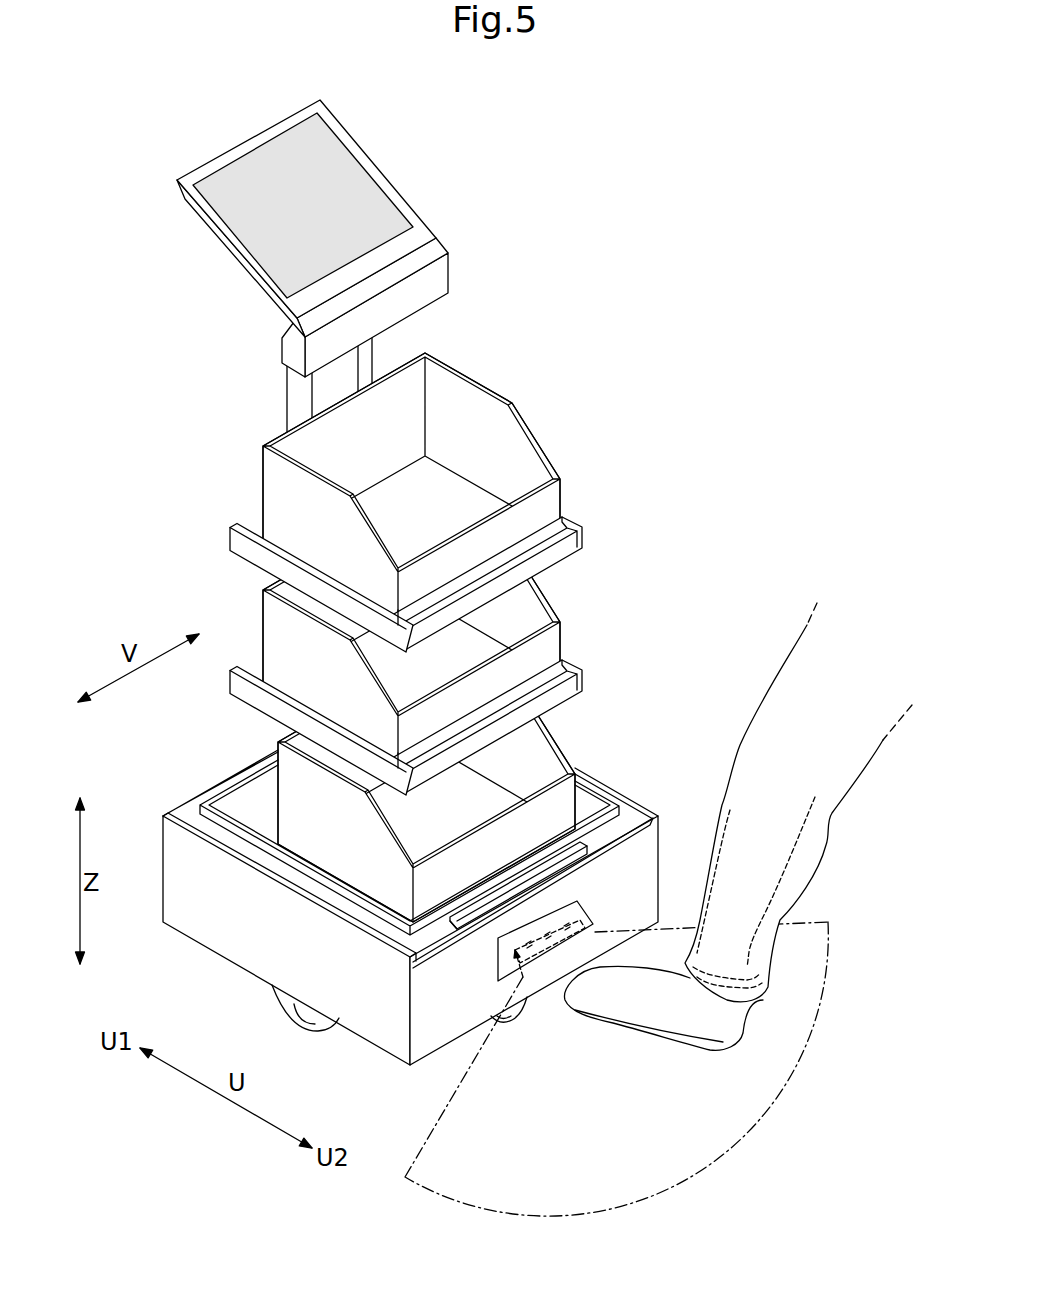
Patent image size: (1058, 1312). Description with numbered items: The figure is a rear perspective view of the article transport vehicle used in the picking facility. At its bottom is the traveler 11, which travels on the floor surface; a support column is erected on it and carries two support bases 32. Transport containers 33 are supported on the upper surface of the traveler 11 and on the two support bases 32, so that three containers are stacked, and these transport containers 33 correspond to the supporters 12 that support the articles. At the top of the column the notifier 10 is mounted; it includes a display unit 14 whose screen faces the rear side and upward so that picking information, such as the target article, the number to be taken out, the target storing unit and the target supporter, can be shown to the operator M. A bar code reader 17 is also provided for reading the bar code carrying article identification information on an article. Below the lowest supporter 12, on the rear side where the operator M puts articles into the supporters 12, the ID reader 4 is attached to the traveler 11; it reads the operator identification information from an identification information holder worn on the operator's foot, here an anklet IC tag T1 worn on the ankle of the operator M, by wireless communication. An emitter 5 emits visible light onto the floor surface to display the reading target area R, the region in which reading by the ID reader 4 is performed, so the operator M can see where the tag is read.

The notifier 10 is at (342, 266).
The display unit 14 is at (331, 175).
The bar code reader 17 is at (362, 348).
The transport container 33 is at (528, 424).
The supporter 12 is at (493, 637).
The support base 32 is at (586, 534).
The traveler 11 is at (212, 927).
The ID reader 4 is at (498, 958).
The emitter 5 is at (546, 958).
The operator M is at (845, 763).
The anklet IC tag T1 is at (773, 993).
The reading target area R is at (718, 1160).